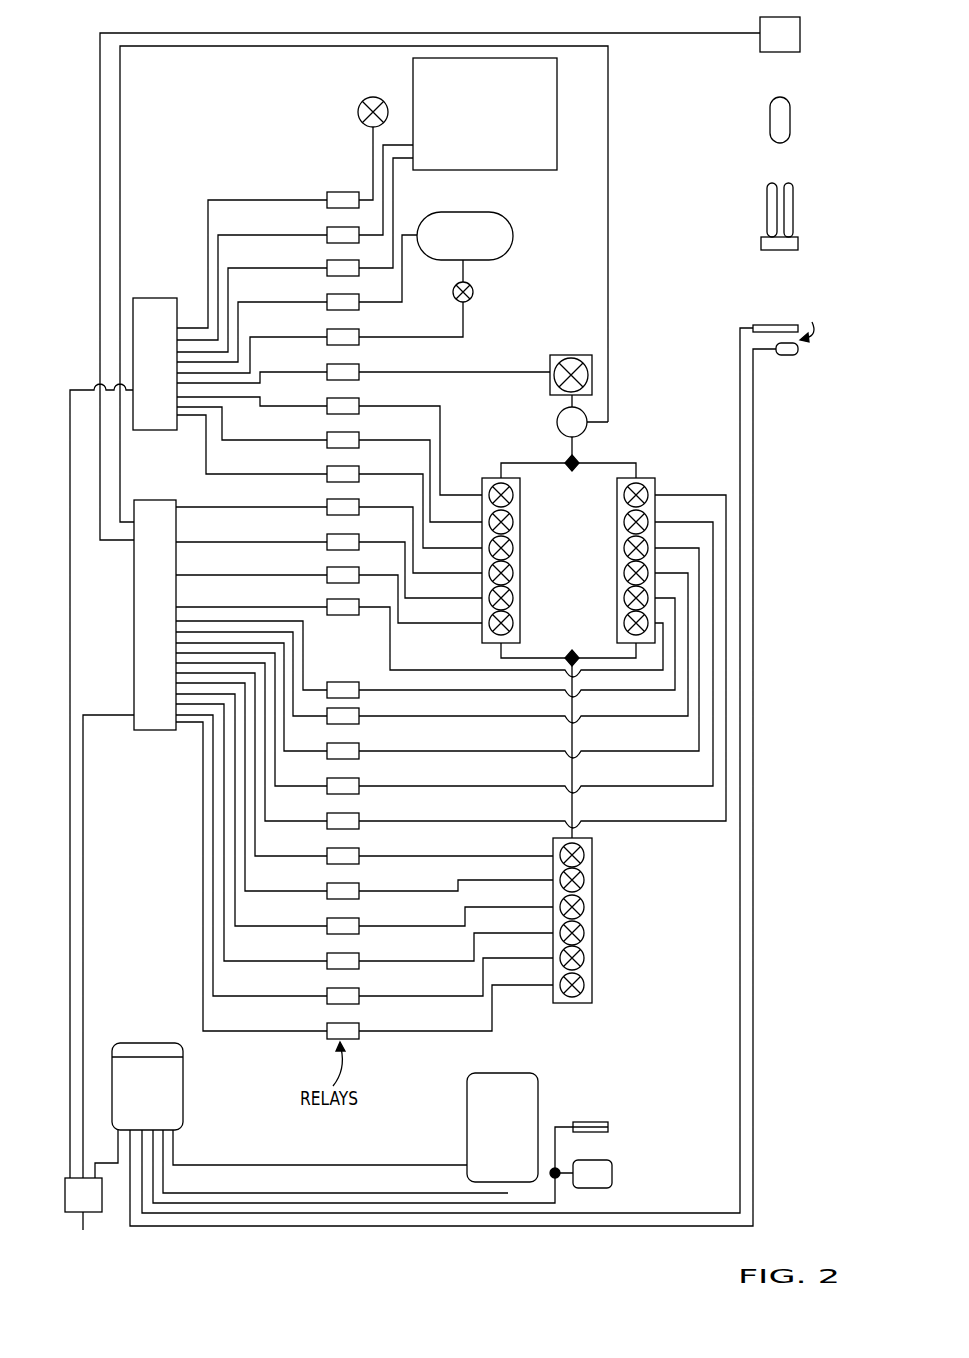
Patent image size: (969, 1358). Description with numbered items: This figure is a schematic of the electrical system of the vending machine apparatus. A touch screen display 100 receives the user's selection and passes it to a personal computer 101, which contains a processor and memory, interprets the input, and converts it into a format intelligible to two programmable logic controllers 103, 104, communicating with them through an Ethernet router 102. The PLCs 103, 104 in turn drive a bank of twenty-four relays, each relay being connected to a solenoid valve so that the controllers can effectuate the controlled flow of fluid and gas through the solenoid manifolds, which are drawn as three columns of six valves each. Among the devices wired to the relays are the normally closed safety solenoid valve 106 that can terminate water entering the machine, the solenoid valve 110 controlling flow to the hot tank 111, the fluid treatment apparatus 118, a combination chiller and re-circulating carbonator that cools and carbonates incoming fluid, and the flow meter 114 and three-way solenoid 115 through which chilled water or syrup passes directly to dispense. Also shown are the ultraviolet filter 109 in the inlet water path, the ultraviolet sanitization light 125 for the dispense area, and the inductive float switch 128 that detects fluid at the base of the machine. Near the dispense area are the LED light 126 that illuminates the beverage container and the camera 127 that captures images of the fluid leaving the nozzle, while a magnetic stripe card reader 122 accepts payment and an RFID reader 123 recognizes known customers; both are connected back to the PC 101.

The touch screen display 100 is at (467, 1118).
The personal computer 101 is at (183, 1094).
The Ethernet router 102 is at (65, 1178).
The programmable logic controller 103 is at (158, 730).
The programmable logic controller 104 is at (152, 298).
The safety solenoid valve 106 is at (358, 112).
The ultraviolet filter 109 is at (770, 115).
The solenoid valve 110 is at (474, 292).
The hot tank 111 is at (470, 212).
The flow meter 114 is at (560, 414).
The 3-way solenoid valve 115 is at (550, 368).
The fluid treatment apparatus 118 is at (413, 74).
The magnetic stripe card reader 122 is at (608, 1130).
The RFID reader 123 is at (612, 1173).
The ultraviolet sanitization light 125 is at (767, 195).
The LED light 126 is at (762, 325).
The camera 127 is at (788, 357).
The inductive float switch 128 is at (760, 30).